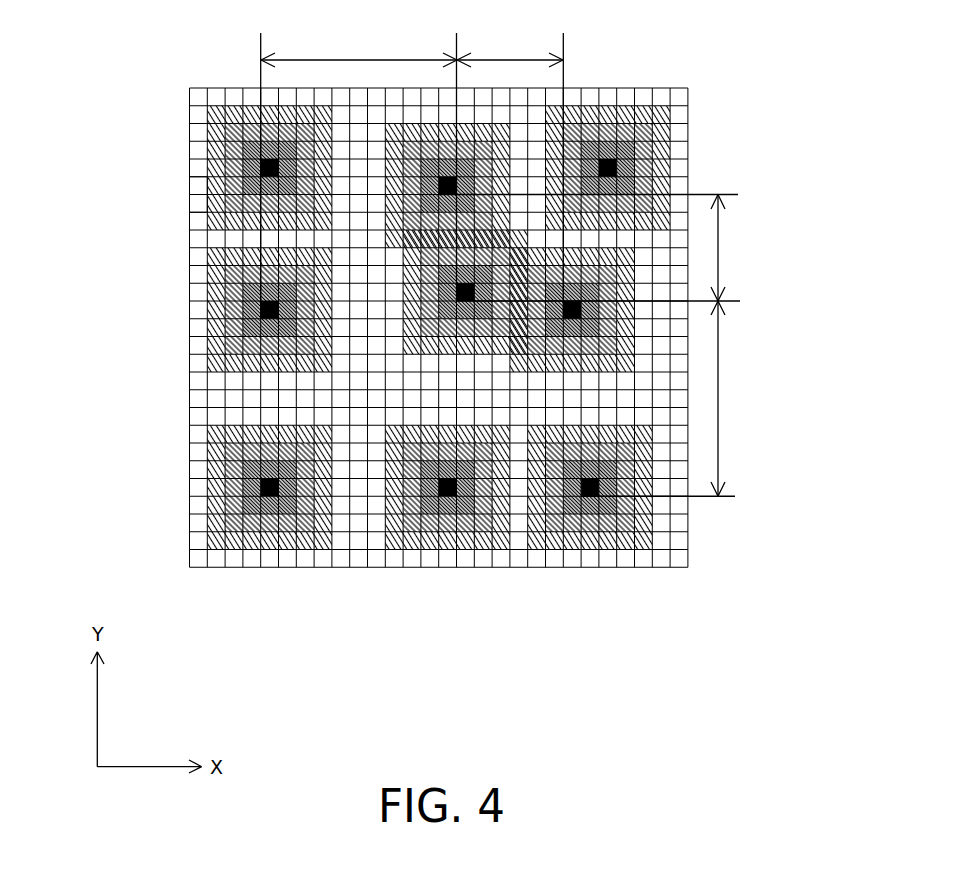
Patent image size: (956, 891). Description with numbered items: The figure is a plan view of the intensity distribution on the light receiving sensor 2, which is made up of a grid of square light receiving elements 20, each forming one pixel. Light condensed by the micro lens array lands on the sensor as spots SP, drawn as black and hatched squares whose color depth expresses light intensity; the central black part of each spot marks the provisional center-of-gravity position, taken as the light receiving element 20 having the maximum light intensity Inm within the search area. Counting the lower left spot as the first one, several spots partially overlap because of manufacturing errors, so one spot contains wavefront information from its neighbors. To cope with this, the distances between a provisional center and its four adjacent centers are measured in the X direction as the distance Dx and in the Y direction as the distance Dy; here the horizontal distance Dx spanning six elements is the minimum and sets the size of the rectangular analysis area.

The light receiving sensor 2 is at (195, 124).
The light receiving element 20 is at (203, 203).
The spot SP is at (413, 347).
The light intensity of light receiving element Inm is at (458, 301).
The distance between adjacent CoG positions in X direction Dx is at (412, 174).
The distance between adjacent CoG positions in Y direction Dy is at (648, 346).